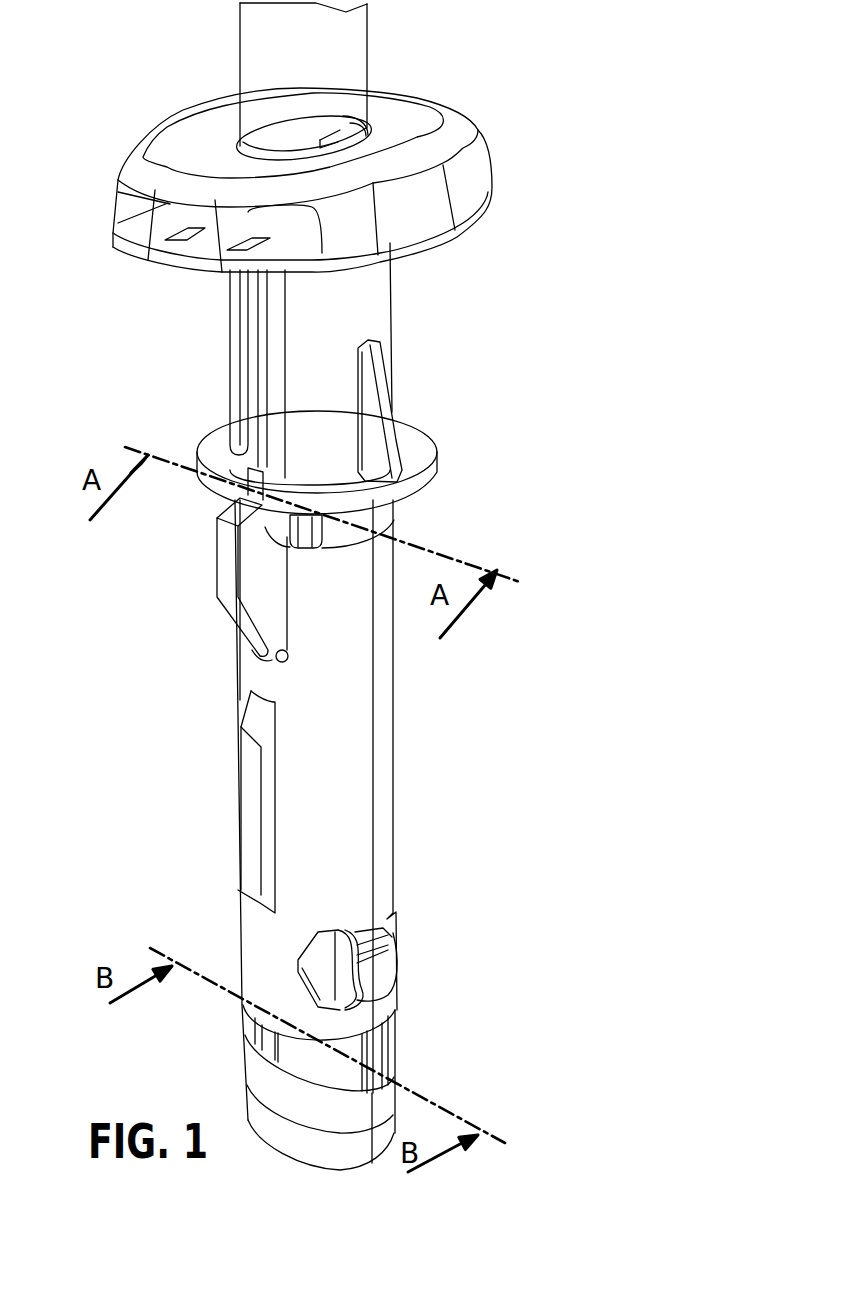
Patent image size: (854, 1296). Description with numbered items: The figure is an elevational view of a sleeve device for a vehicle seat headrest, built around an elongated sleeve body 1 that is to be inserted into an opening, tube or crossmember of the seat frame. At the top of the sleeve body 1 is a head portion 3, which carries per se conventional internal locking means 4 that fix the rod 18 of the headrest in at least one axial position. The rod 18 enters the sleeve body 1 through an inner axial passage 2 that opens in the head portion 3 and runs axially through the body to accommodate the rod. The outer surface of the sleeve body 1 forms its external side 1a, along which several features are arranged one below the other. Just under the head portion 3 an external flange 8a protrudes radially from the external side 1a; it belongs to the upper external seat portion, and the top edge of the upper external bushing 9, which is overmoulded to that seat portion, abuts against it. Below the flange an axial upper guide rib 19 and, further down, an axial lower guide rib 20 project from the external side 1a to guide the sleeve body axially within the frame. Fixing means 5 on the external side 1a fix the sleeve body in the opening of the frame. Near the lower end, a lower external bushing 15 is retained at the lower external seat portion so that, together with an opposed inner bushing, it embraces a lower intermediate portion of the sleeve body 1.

The sleeve body 1 is at (412, 670).
The external side 1a is at (342, 777).
The inner axial passage 2 is at (275, 143).
The head portion 3 is at (480, 115).
The internal locking means 4 is at (346, 134).
The fixing means 5 is at (378, 960).
The external flange 8a is at (433, 450).
The upper external bushing 9 is at (305, 538).
The lower external bushing 15 is at (380, 1058).
The rod 18 is at (237, 50).
The axial upper guide rib 19 is at (227, 553).
The axial lower guide rib 20 is at (246, 780).